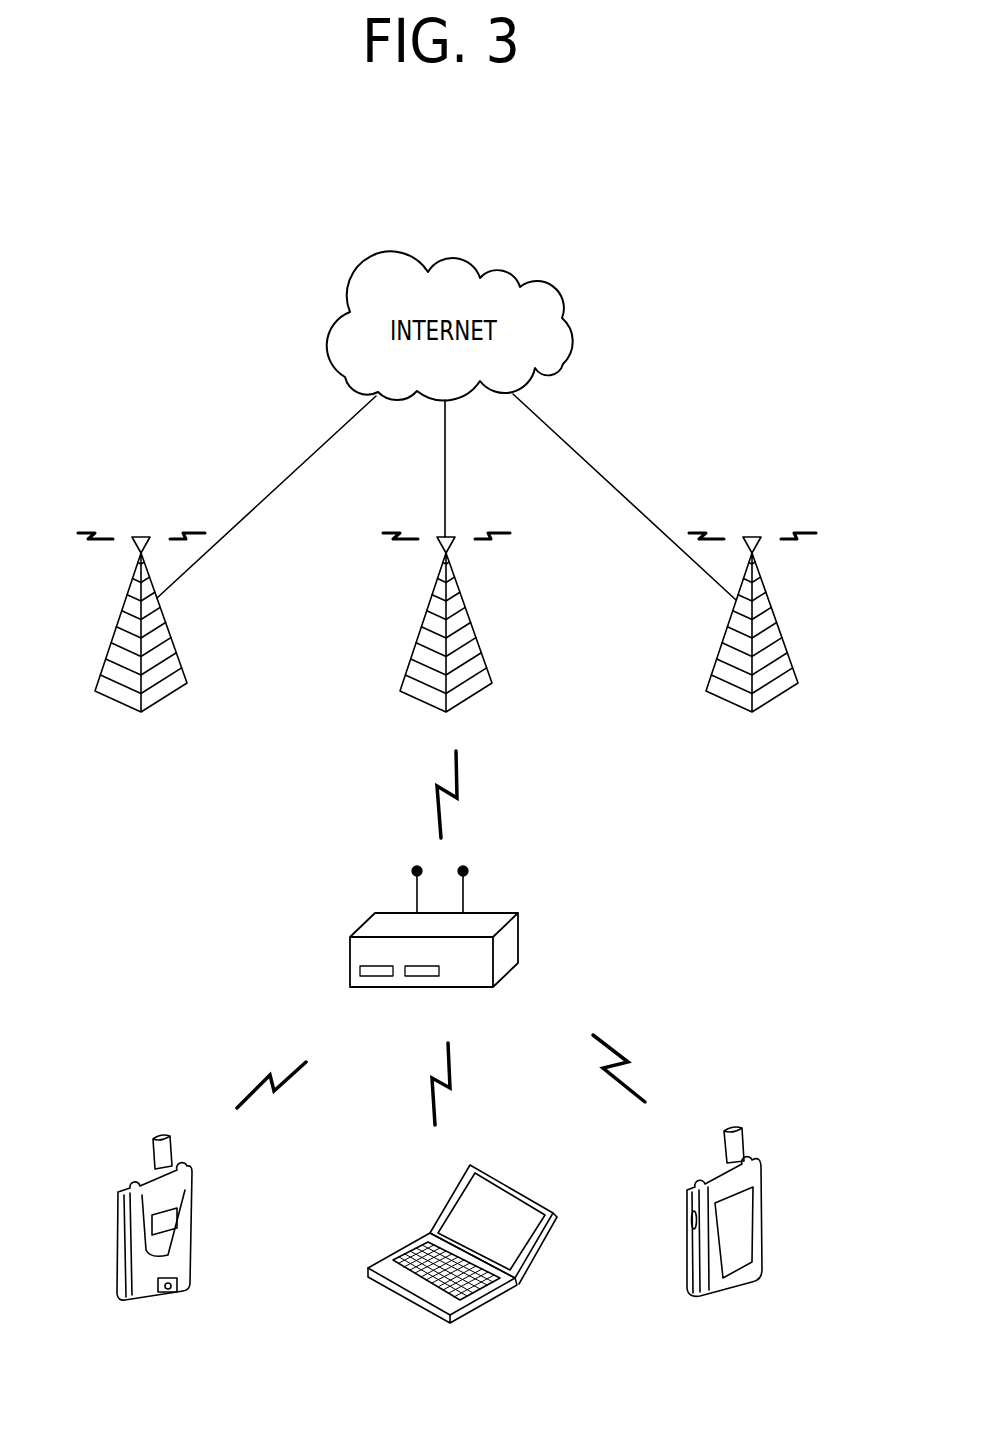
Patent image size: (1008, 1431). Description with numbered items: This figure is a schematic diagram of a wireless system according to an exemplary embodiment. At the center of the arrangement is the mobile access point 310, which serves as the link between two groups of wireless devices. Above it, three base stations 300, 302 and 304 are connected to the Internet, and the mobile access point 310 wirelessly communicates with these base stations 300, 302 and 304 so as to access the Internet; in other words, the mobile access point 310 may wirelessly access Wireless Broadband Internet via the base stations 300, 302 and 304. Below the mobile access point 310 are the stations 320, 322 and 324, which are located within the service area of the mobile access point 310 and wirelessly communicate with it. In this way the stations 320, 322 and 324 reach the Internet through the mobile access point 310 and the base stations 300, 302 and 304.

The base station 300 is at (160, 613).
The base station 302 is at (465, 613).
The base station 304 is at (772, 613).
The mobile access point 310 is at (521, 941).
The station 320 is at (190, 1196).
The station 322 is at (457, 1193).
The station 324 is at (762, 1206).